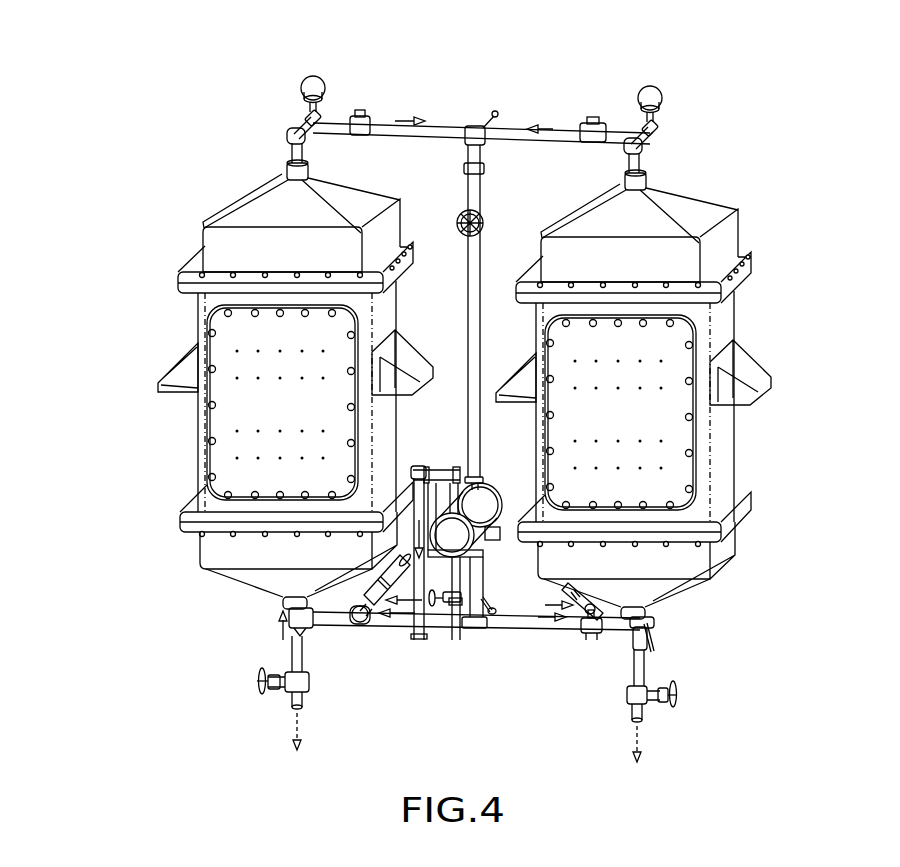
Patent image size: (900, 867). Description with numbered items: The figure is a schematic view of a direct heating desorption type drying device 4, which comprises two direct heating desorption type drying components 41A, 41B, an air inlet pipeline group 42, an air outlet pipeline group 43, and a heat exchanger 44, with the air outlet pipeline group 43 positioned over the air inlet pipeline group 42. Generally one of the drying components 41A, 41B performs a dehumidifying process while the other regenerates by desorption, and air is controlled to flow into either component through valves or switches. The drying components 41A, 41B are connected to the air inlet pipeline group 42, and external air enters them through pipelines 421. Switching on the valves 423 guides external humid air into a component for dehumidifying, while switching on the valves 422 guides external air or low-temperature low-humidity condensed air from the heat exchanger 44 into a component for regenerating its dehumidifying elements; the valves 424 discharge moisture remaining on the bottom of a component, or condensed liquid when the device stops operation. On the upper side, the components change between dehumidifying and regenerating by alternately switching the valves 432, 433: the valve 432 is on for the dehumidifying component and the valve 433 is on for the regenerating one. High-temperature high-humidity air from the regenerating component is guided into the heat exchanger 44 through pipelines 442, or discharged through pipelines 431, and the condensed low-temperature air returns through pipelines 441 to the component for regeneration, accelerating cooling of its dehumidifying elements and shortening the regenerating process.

The direct heating desorption type drying device 4 is at (110, 60).
The direct heating desorption type drying component 41A is at (774, 321).
The direct heating desorption type drying component 41B is at (166, 328).
The air inlet pipeline group 42 is at (253, 731).
The pipelines 421 is at (497, 602).
The valves 422 is at (290, 625).
The valves 423 is at (373, 602).
The valves 424 is at (257, 684).
The air outlet pipeline group 43 is at (397, 53).
The pipelines 431 is at (488, 117).
The valves 432 is at (303, 82).
The valves 433 is at (348, 126).
The heat exchanger 44 is at (484, 507).
The pipelines 441 is at (423, 567).
The pipelines 442 is at (466, 160).